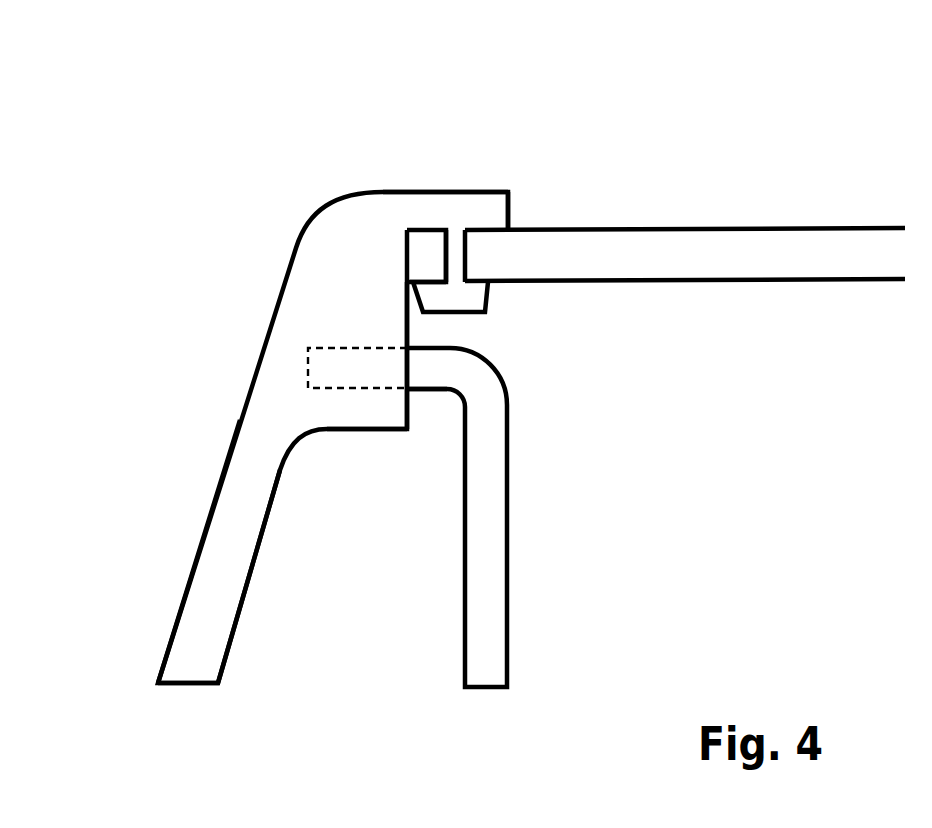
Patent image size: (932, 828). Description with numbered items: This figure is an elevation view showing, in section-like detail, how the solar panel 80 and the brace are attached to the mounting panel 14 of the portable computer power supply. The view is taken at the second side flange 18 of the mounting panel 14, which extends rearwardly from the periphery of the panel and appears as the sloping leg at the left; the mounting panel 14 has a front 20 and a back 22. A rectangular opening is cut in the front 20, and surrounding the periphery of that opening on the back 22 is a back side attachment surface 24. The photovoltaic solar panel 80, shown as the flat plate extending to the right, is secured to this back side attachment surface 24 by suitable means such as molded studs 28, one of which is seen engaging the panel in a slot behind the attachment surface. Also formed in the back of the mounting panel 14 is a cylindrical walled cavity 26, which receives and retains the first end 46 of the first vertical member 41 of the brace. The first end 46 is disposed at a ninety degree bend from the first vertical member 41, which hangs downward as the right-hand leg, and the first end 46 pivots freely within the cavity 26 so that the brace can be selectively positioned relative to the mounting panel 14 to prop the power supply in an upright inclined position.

The mounting panel 14 is at (297, 242).
The second side flange 18 is at (208, 512).
The front 20 is at (407, 190).
The back 22 is at (410, 331).
The back side attachment surface 24 is at (487, 228).
The cylindrical walled cavity 26 is at (338, 432).
The molded studs 28 is at (488, 297).
The first vertical member 41 is at (508, 502).
The first end 46 is at (422, 392).
The photovoltaic solar panel 80 is at (718, 228).